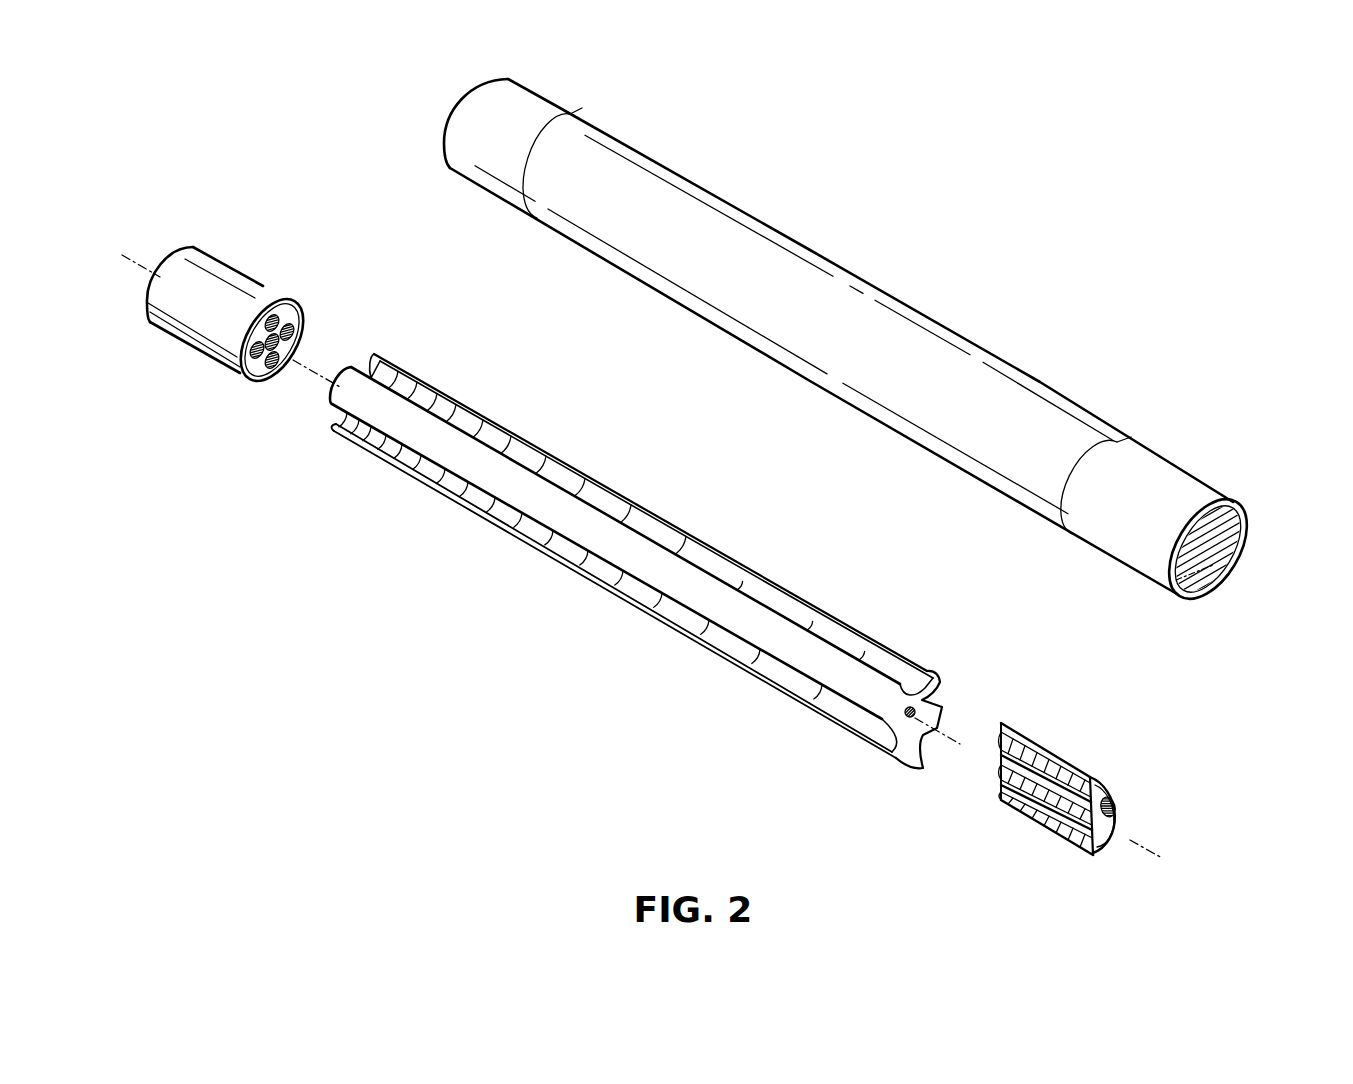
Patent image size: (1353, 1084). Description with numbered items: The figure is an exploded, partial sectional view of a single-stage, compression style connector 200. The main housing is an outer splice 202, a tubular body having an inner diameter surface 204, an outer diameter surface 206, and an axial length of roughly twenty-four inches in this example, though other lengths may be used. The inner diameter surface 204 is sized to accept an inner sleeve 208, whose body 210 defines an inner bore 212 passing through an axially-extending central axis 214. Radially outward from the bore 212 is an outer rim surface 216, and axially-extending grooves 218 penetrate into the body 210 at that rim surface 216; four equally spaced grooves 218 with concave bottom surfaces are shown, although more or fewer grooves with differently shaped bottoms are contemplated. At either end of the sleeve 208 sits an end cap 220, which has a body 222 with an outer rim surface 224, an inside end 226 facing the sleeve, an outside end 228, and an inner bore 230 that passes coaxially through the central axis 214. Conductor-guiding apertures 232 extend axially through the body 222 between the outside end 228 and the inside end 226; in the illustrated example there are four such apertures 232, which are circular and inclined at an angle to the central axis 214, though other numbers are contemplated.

The single-stage connector 200 is at (1158, 186).
The outer splice 202 is at (878, 346).
The inner diameter surface 204 is at (1218, 572).
The outer diameter surface 206 is at (707, 295).
The inner sleeve 208 is at (602, 574).
The body 210 is at (942, 690).
The inner bore 212 is at (912, 722).
The central axis 214 is at (132, 260).
The outer rim surface 216 is at (333, 414).
The axially-extending grooves 218 is at (651, 523).
The end cap 220 is at (652, 511).
The body 222 is at (637, 523).
The outer rim surface 224 is at (258, 302).
The inside end 226 is at (247, 390).
The outside end 228 is at (148, 290).
The inner bore 230 is at (288, 352).
The conductor-guiding apertures 232 is at (275, 383).